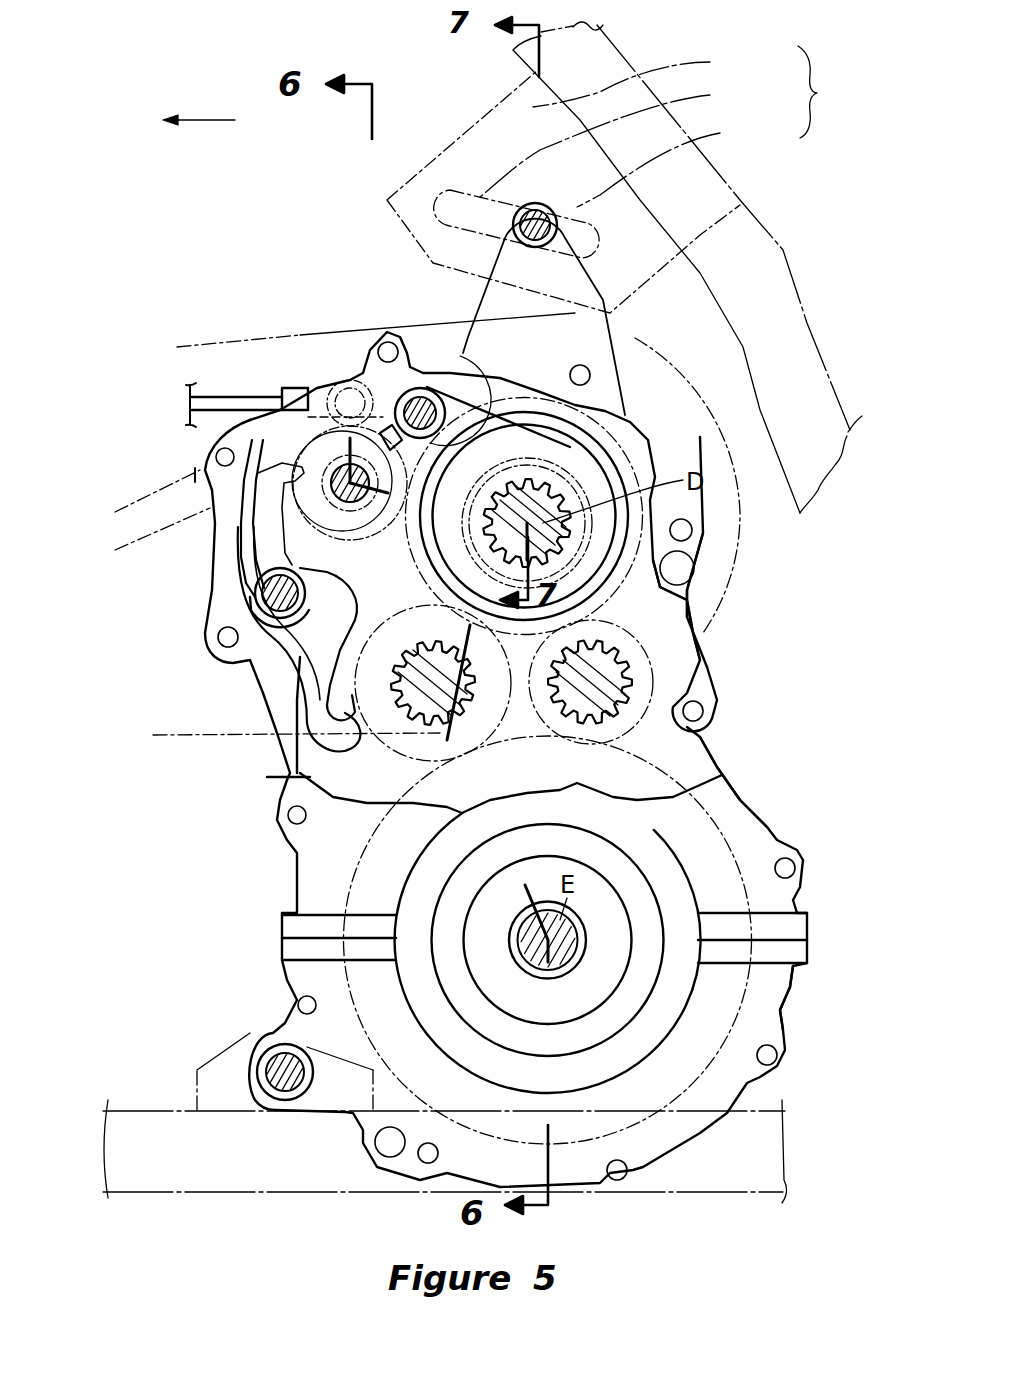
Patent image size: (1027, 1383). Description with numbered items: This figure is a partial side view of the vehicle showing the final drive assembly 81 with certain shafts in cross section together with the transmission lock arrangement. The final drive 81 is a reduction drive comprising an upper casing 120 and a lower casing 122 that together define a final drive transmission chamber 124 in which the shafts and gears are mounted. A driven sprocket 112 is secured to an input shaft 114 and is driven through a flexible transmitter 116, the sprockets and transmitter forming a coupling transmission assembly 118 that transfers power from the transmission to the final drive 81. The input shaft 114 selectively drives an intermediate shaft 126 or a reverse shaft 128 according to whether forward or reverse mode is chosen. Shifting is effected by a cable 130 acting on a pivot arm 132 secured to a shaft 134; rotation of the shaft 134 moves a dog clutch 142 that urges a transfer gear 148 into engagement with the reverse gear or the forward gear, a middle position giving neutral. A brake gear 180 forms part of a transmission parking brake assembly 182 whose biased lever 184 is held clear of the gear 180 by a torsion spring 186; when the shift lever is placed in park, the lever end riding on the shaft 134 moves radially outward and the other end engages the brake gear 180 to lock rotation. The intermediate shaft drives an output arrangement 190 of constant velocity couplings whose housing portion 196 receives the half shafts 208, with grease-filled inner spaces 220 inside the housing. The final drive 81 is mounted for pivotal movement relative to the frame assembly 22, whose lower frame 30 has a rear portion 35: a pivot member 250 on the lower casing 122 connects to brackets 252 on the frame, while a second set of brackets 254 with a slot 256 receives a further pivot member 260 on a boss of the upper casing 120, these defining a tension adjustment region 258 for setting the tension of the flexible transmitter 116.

The frame assembly 22 is at (785, 258).
The lower frame 30 is at (795, 1150).
The rear portion 35 is at (805, 322).
The final drive assembly 81 is at (770, 623).
The driven sprocket 112 is at (708, 407).
The input shaft 114 is at (557, 540).
The flexible transmitter 116 is at (352, 327).
The coupling transmission assembly 118 is at (297, 335).
The upper casing 120 is at (745, 808).
The lower casing 122 is at (775, 1002).
The final drive transmission chamber 124 is at (705, 670).
The intermediate shaft 126 is at (383, 760).
The reverse shaft 128 is at (690, 731).
The cable 130 is at (195, 390).
The pivot arm 132 is at (267, 410).
The shaft 134 is at (393, 513).
The dog clutch 142 is at (478, 405).
The transfer gear 148 is at (503, 443).
The brake gear 180 is at (287, 718).
The transmission parking brake assembly 182 is at (243, 553).
The biased lever 184 is at (300, 695).
The torsion spring 186 is at (250, 575).
The output arrangement 190 is at (447, 893).
The housing portion 196 is at (445, 912).
The half shafts 208 is at (538, 955).
The inner spaces 220 is at (487, 977).
The pivot member 250 is at (272, 1063).
The brackets 252 is at (200, 1078).
The second set of brackets 254 is at (651, 78).
The slot 256 is at (627, 140).
The tension adjustment region 258 is at (836, 92).
The pivot member 260 is at (680, 163).